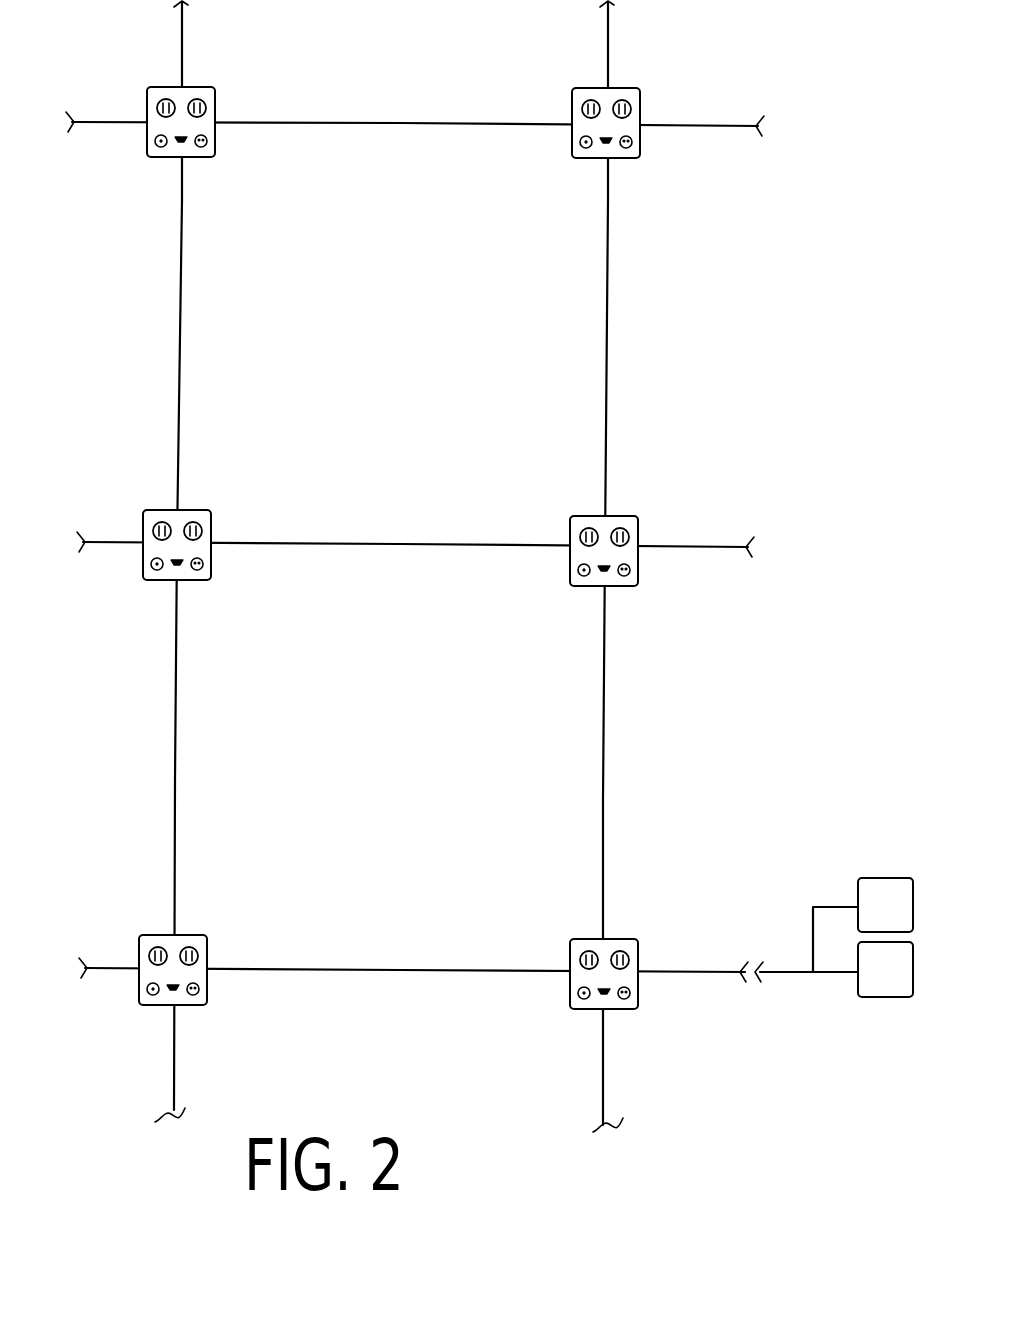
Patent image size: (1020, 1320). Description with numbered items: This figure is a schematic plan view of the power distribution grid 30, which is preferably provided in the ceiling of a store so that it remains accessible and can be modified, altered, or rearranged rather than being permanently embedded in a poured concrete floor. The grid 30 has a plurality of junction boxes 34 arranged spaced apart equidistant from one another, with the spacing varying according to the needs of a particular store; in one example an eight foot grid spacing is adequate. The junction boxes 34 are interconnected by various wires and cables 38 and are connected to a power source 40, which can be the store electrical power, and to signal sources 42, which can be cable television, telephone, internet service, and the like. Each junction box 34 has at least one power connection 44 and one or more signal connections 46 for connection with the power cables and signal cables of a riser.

The power distribution grid 30 is at (489, 566).
The junction box 34 is at (429, 606).
The wires and cables 38 is at (405, 124).
The power source 40 is at (906, 989).
The signal source 42 is at (906, 925).
The power connection 44 is at (583, 527).
The signal connection 46 is at (157, 148).